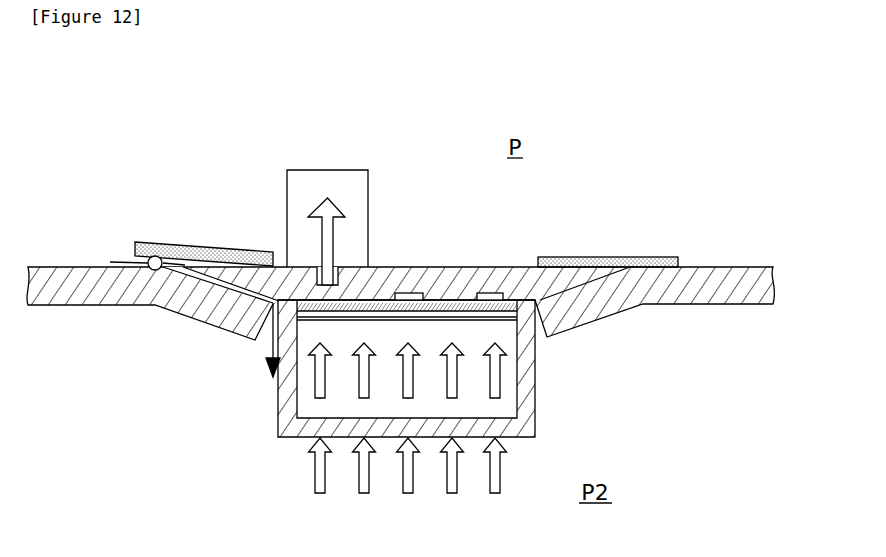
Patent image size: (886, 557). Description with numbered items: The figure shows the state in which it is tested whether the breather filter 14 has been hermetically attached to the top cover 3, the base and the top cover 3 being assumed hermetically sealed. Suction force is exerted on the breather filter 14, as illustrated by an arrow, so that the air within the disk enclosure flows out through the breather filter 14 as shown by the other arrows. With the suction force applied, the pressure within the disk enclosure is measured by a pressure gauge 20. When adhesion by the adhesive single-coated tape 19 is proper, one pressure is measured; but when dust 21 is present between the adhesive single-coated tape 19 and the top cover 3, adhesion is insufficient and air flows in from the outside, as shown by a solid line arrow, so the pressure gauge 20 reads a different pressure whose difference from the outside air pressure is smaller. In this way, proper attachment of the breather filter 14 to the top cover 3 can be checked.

The top cover 3 is at (727, 267).
The breather filter 14 is at (568, 393).
The adhesive single-coated tape 19 is at (230, 247).
The pressure gauge 20 is at (368, 200).
The dust 21 is at (110, 262).